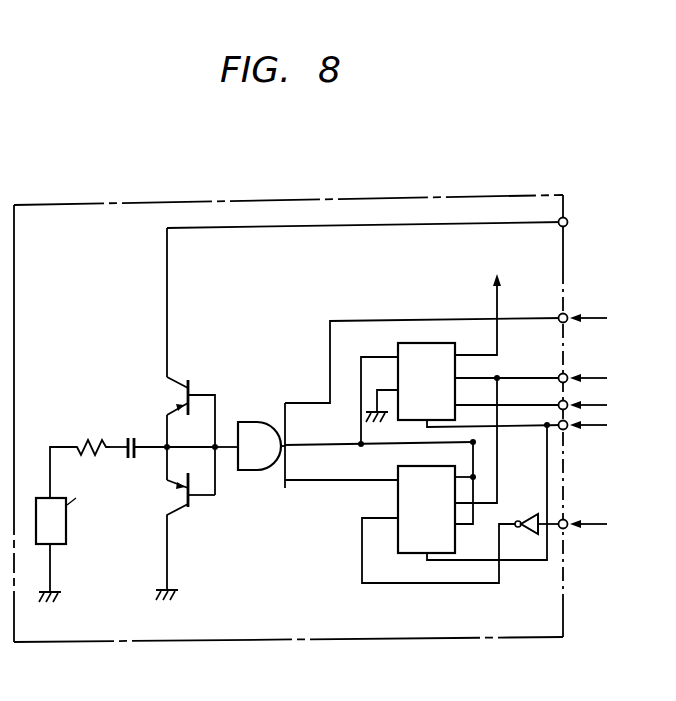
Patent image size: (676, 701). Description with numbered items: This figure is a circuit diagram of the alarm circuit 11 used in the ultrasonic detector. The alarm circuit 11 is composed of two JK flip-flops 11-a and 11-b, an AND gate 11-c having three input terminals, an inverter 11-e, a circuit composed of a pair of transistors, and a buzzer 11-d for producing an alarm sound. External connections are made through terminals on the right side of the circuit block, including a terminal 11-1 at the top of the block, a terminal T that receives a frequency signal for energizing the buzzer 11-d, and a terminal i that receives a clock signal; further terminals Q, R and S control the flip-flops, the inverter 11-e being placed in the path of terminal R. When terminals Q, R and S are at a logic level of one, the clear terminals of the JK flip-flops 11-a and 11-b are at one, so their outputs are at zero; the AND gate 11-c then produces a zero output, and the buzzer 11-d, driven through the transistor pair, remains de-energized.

The alarm circuit 11 is at (312, 202).
The terminal 11-1 is at (568, 220).
The JK flip-flop 11-a is at (420, 343).
The JK flip-flop 11-b is at (415, 553).
The AND gate 11-c is at (257, 471).
The buzzer 11-d is at (67, 541).
The inverter 11-e is at (532, 540).